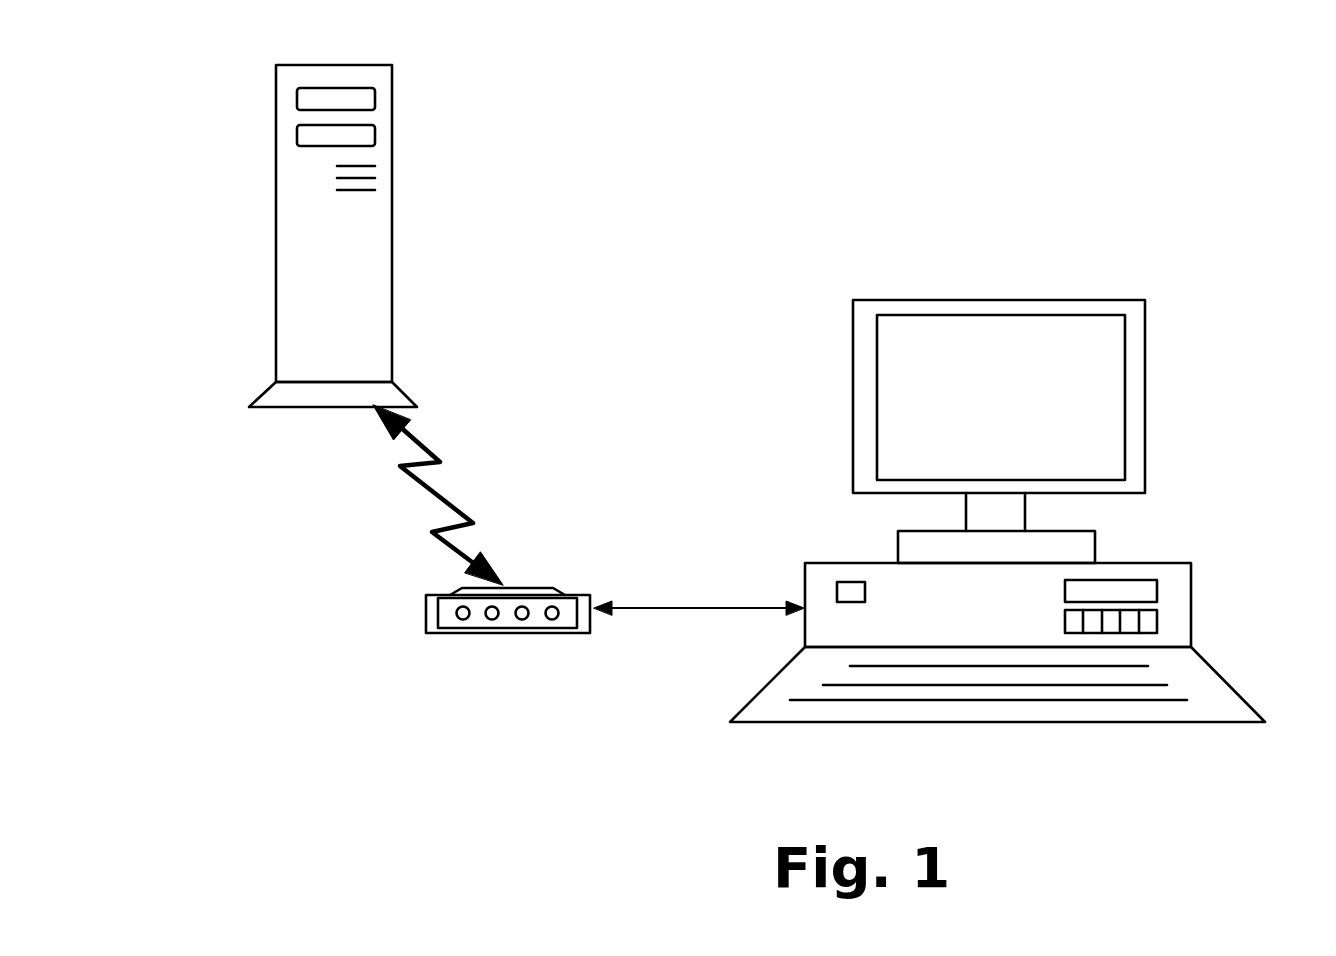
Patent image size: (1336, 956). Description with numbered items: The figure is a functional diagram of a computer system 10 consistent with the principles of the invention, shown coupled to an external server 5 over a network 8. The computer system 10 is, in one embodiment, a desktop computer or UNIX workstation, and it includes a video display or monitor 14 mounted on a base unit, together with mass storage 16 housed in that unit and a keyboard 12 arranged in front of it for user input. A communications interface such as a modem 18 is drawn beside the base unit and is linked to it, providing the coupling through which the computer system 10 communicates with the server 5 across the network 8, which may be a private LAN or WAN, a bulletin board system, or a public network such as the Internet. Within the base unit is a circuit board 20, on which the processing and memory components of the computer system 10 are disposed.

The server 5 is at (276, 252).
The network 8 is at (452, 503).
The computer system 10 is at (1182, 262).
The keyboard 12 is at (1197, 688).
The video display or monitor 14 is at (1027, 332).
The mass storage 16 is at (1143, 592).
The modem 18 is at (457, 630).
The circuit board 20 is at (903, 598).